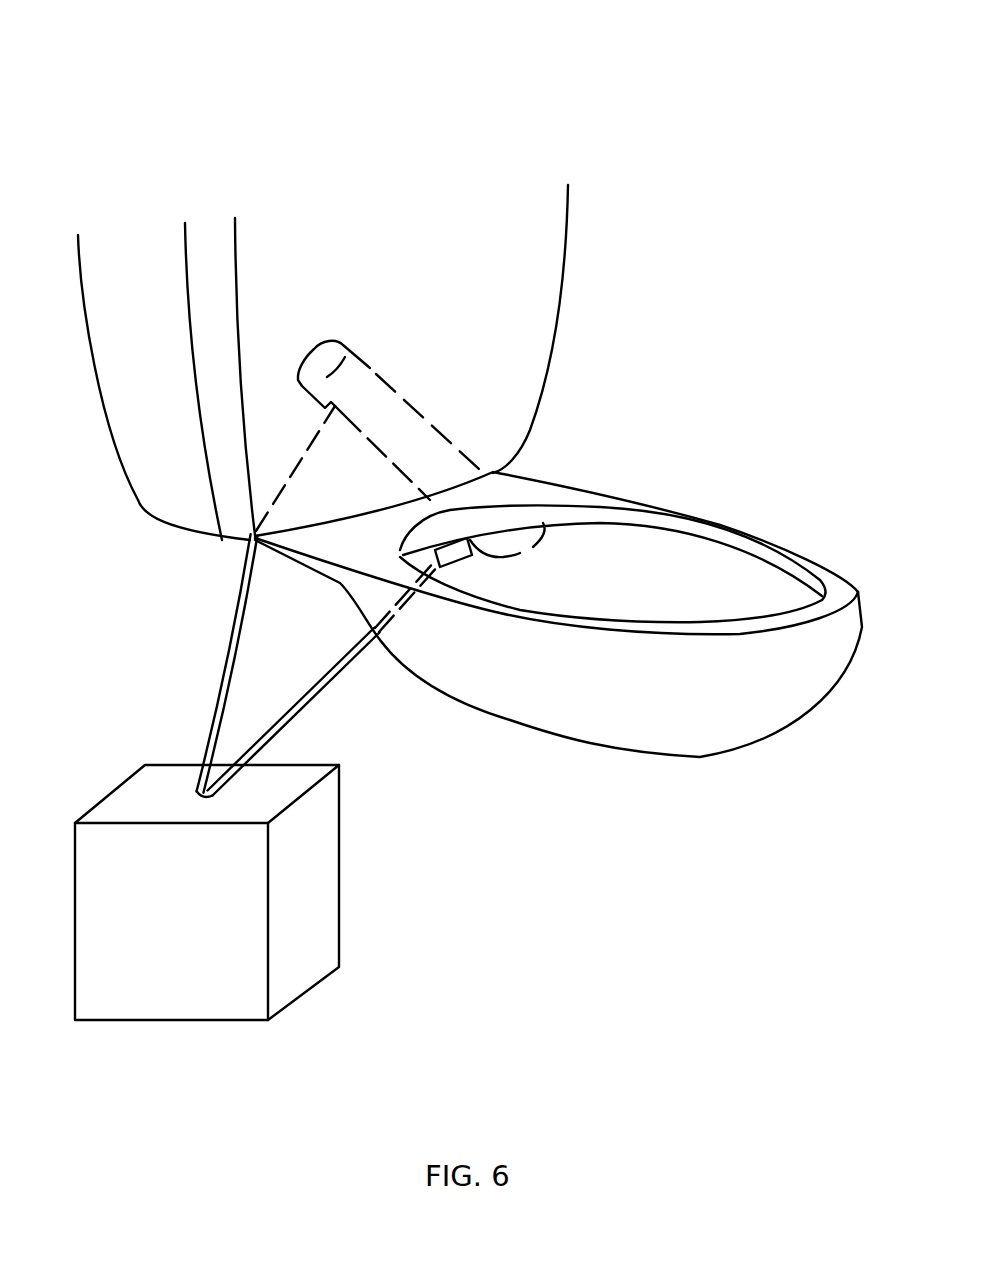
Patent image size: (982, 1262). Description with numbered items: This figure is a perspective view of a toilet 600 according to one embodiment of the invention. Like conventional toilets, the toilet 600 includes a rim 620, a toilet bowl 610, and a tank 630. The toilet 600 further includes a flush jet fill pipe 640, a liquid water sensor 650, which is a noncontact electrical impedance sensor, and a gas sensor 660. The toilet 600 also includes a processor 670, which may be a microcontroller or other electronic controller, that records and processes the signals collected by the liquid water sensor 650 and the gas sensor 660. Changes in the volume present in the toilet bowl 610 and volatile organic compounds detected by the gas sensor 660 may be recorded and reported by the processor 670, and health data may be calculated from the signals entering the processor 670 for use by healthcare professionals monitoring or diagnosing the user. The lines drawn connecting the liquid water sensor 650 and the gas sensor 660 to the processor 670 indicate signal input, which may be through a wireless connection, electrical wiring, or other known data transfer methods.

The toilet 600 is at (134, 62).
The toilet bowl 610 is at (664, 606).
The rim 620 is at (818, 562).
The tank 630 is at (532, 308).
The flush jet fill pipe 640 is at (440, 412).
The liquid water sensor 650 is at (340, 400).
The gas sensor 660 is at (450, 553).
The processor 670 is at (327, 875).